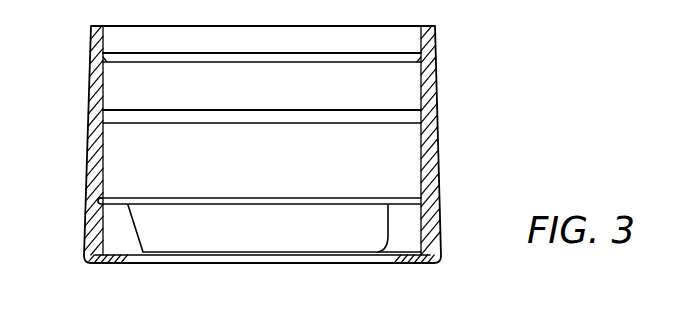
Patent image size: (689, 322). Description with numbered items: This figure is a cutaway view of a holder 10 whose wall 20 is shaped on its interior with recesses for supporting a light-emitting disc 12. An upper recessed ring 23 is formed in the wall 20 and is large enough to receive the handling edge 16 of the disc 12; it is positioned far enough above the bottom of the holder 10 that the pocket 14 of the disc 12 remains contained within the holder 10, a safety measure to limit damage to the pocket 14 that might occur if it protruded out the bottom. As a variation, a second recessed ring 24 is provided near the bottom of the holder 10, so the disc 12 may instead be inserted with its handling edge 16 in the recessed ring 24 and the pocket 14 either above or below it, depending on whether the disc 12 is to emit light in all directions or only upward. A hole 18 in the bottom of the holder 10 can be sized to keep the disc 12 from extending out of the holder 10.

The holder 10 is at (476, 80).
The disc 12 is at (163, 196).
The pocket 14 is at (338, 246).
The handling edge 16 is at (437, 224).
The hole 18 is at (158, 264).
The wall 20 is at (441, 140).
The recessed ring 23 is at (88, 179).
The recessed ring 24 is at (427, 265).